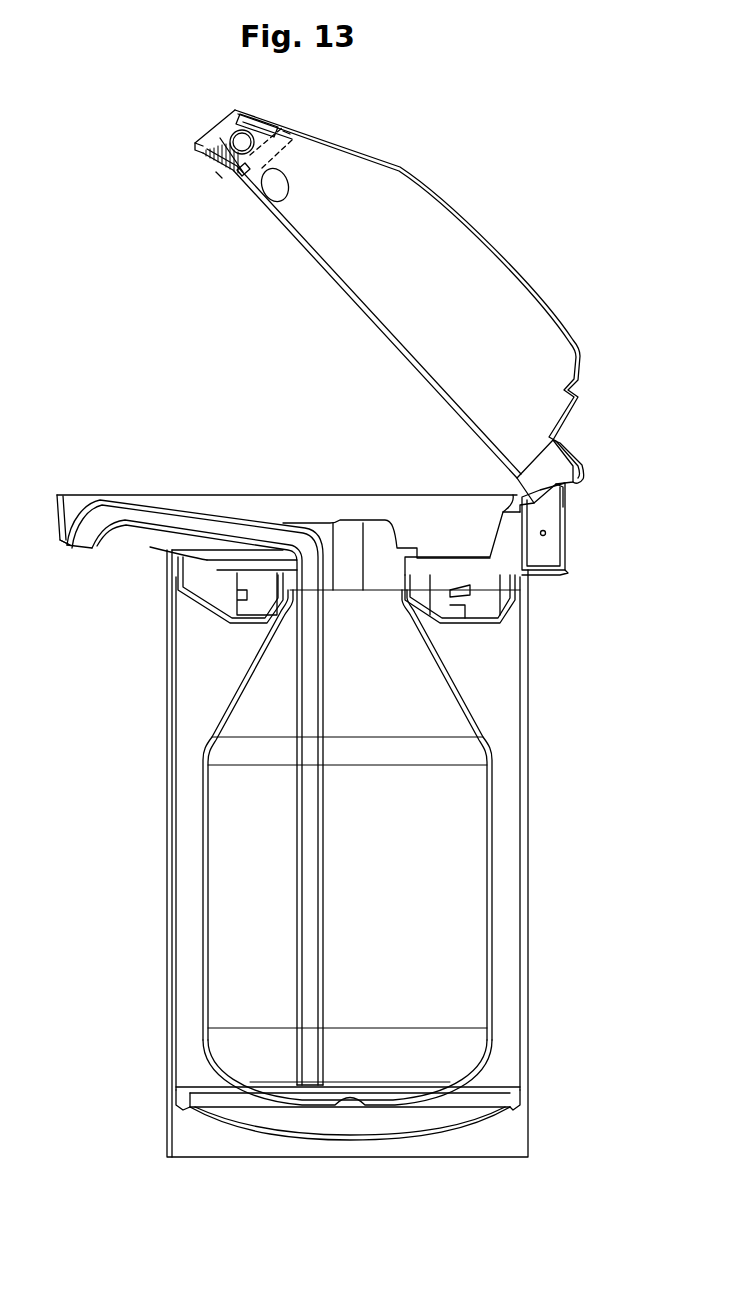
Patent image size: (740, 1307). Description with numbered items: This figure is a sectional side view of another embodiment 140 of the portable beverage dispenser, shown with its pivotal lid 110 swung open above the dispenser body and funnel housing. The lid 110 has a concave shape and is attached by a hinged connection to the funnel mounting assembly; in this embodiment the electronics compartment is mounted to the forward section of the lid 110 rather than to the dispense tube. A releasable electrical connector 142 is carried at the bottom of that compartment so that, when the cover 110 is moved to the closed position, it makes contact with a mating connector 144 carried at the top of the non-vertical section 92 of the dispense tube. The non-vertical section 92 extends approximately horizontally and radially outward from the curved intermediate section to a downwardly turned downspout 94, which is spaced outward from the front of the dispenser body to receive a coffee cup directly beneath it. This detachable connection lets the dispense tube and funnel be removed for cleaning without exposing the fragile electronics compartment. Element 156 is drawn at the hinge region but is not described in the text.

The non-vertical section 92 is at (192, 520).
The downspout 94 is at (78, 548).
The lid 110 is at (487, 237).
The portable beverage dispenser embodiment 140 is at (178, 346).
The releasable electrical connector 142 is at (220, 172).
The mating connector 144 is at (94, 498).
The hinge pin 156 is at (283, 131).